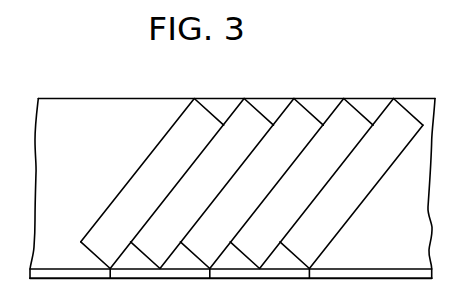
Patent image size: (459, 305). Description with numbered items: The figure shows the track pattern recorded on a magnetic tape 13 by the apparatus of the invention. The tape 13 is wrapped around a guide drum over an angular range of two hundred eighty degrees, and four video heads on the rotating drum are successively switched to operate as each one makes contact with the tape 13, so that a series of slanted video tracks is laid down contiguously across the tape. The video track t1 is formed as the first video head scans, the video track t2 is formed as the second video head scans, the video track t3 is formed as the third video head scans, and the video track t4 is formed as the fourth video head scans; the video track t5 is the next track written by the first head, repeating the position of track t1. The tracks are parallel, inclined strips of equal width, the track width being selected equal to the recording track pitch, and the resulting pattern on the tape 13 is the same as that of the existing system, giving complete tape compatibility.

The magnetic tape 13 is at (96, 102).
The video track t1 is at (401, 115).
The video track t2 is at (354, 115).
The video track t3 is at (307, 115).
The video track t4 is at (263, 113).
The video track t5 is at (208, 113).